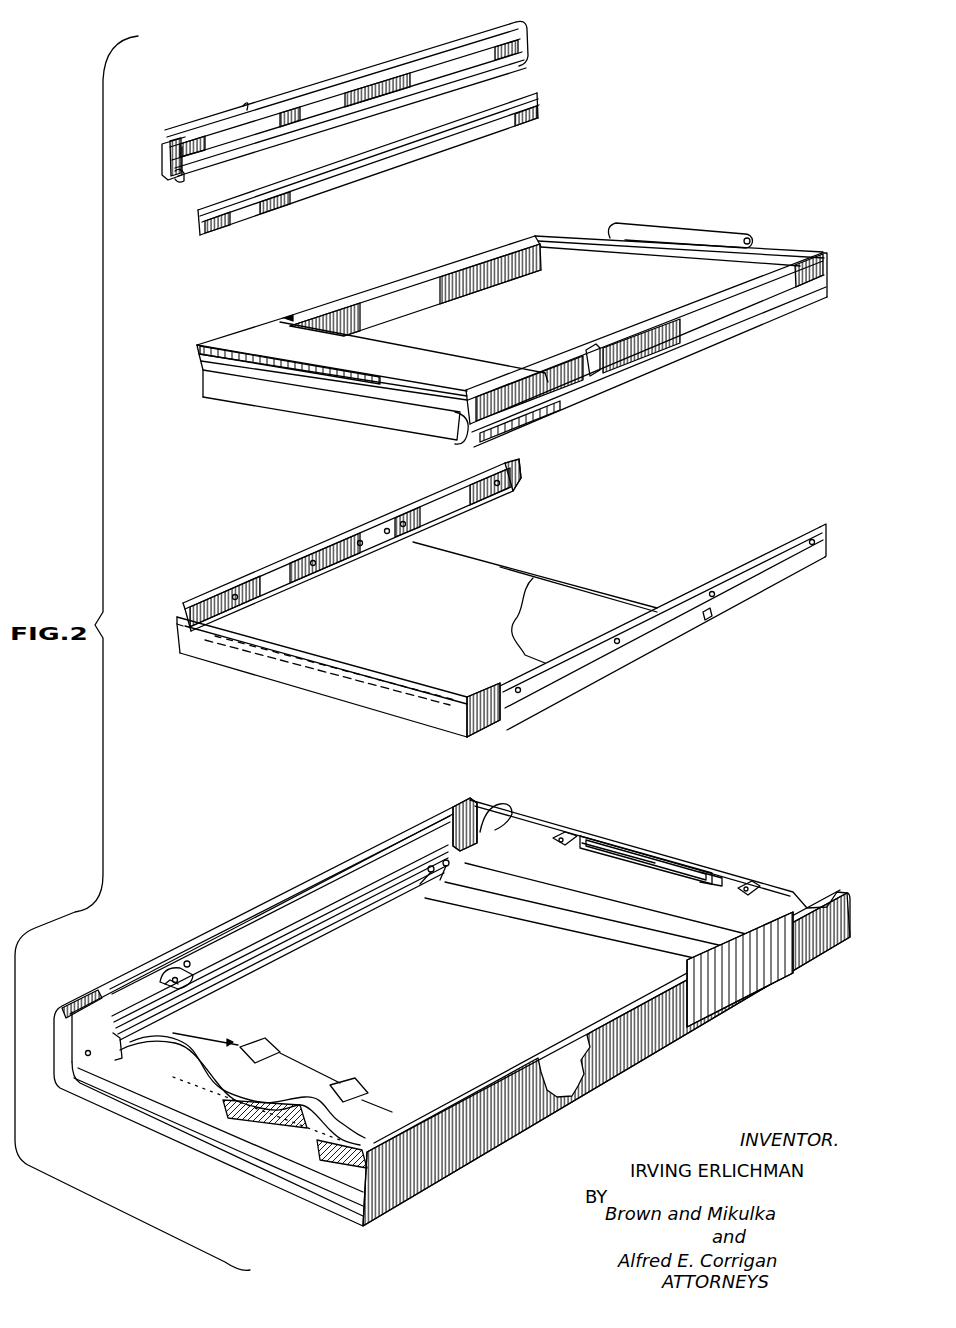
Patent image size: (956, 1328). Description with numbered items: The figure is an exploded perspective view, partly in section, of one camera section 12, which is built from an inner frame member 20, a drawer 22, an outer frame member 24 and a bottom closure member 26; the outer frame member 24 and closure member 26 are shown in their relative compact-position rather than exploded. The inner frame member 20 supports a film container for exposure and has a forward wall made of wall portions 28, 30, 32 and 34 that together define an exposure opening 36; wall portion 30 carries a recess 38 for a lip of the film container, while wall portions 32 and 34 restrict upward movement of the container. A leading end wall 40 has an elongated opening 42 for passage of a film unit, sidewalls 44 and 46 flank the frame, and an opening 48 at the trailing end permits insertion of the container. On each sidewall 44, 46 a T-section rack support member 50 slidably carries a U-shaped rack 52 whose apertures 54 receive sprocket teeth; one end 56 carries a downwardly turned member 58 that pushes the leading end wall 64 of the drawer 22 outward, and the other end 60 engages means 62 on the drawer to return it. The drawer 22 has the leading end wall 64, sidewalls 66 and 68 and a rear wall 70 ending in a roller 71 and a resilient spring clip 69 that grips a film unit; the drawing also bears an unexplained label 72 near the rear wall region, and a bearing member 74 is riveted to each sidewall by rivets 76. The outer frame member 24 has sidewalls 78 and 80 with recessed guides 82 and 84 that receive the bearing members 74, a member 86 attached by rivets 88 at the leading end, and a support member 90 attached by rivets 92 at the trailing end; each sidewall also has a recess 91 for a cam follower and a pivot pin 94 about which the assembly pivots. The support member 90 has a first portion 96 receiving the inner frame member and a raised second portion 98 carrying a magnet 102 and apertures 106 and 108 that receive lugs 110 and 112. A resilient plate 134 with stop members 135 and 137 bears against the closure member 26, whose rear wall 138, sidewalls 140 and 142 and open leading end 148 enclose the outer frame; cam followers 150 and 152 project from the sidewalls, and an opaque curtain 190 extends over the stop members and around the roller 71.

The section 12 is at (618, 128).
The inner frame member 20 is at (512, 318).
The drawer 22 is at (494, 606).
The outer frame member 24 is at (441, 997).
The closure member 26 is at (606, 1059).
The wall portion 28 is at (250, 340).
The wall portion 30 is at (783, 242).
The wall portion 32 is at (360, 298).
The wall portion 34 is at (640, 325).
The exposure opening 36 is at (430, 339).
The recess 38 is at (540, 237).
The leading end wall 40 is at (350, 412).
The elongated opening 42 is at (298, 370).
The sidewall 44 is at (482, 288).
The sidewall 46 is at (703, 300).
The opening 48 is at (630, 254).
The rack support member 50 is at (395, 165).
The rack 52 is at (333, 72).
The apertures 54 is at (245, 108).
The end of rack 56 is at (178, 180).
The downwardly turned member 58 is at (162, 165).
The end of rack 60 is at (528, 52).
The means on drawer 62 is at (522, 486).
The leading end wall 64 is at (350, 700).
The sidewall 66 is at (340, 574).
The sidewall 68 is at (490, 725).
The resilient spring clip 69 is at (362, 648).
The rear wall 70 is at (312, 598).
The roller 71 is at (585, 583).
The plate edge 72 is at (530, 558).
The bearing member 74 is at (175, 620).
The rivets 76 is at (620, 647).
The sidewall 78 is at (290, 948).
The sidewall 80 is at (562, 1095).
The recessed guide 82 is at (250, 968).
The recessed guide 84 is at (590, 1040).
The member 86 is at (215, 1125).
The rivets 88 is at (108, 1057).
The support member 90 is at (625, 931).
The recess 91 is at (173, 963).
The rivets 92 is at (440, 877).
The pivot pin 94 is at (160, 975).
The first portion 96 is at (601, 906).
The second raised portion 98 is at (597, 843).
The magnet 102 is at (642, 855).
The aperture 106 is at (556, 835).
The aperture 108 is at (775, 890).
The lug 110 is at (572, 832).
The lug 112 is at (748, 882).
The resilient plate 134 is at (416, 1011).
The resilient stop member 135 is at (268, 1043).
The resilient stop member 137 is at (355, 1080).
The rear wall 138 is at (422, 1193).
The sidewall 140 is at (300, 890).
The sidewall 142 is at (508, 1125).
The open leading end 148 is at (90, 1108).
The cam follower 150 is at (200, 960).
The cam follower 152 is at (488, 818).
The curtain 190 is at (315, 1139).